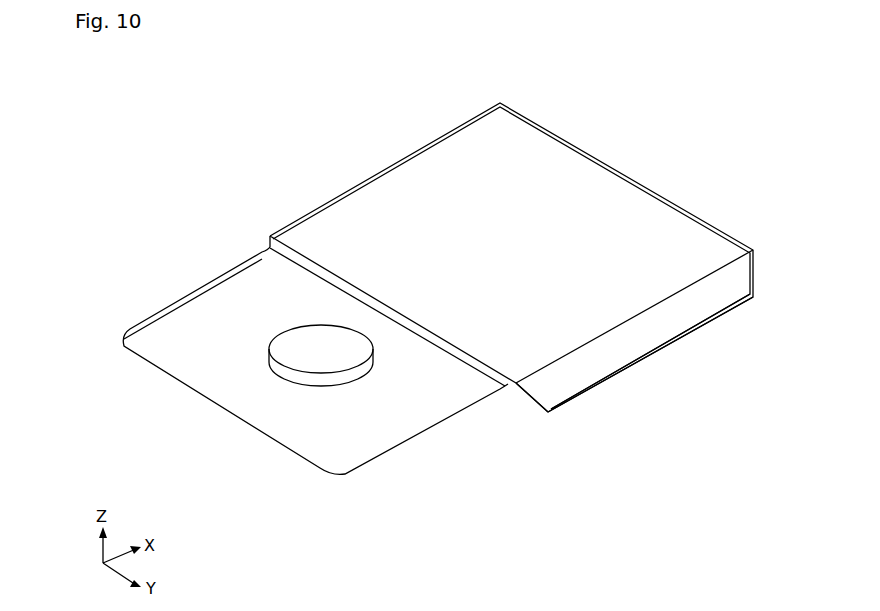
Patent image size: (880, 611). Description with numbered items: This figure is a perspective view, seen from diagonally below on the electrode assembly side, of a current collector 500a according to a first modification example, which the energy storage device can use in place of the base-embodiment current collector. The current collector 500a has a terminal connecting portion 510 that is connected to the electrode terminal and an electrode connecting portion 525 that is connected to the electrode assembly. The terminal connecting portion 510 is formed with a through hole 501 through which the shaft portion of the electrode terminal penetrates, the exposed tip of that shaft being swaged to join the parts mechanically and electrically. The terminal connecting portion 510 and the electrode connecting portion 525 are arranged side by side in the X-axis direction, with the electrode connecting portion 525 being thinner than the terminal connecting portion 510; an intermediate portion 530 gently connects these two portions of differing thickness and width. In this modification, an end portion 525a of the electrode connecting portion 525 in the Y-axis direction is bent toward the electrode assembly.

The current collector 500a is at (644, 102).
The through hole 501 is at (318, 346).
The terminal connecting portion 510 is at (365, 433).
The electrode connecting portion 525 is at (612, 303).
The end portion 525a is at (688, 332).
The intermediate portion 530 is at (512, 387).